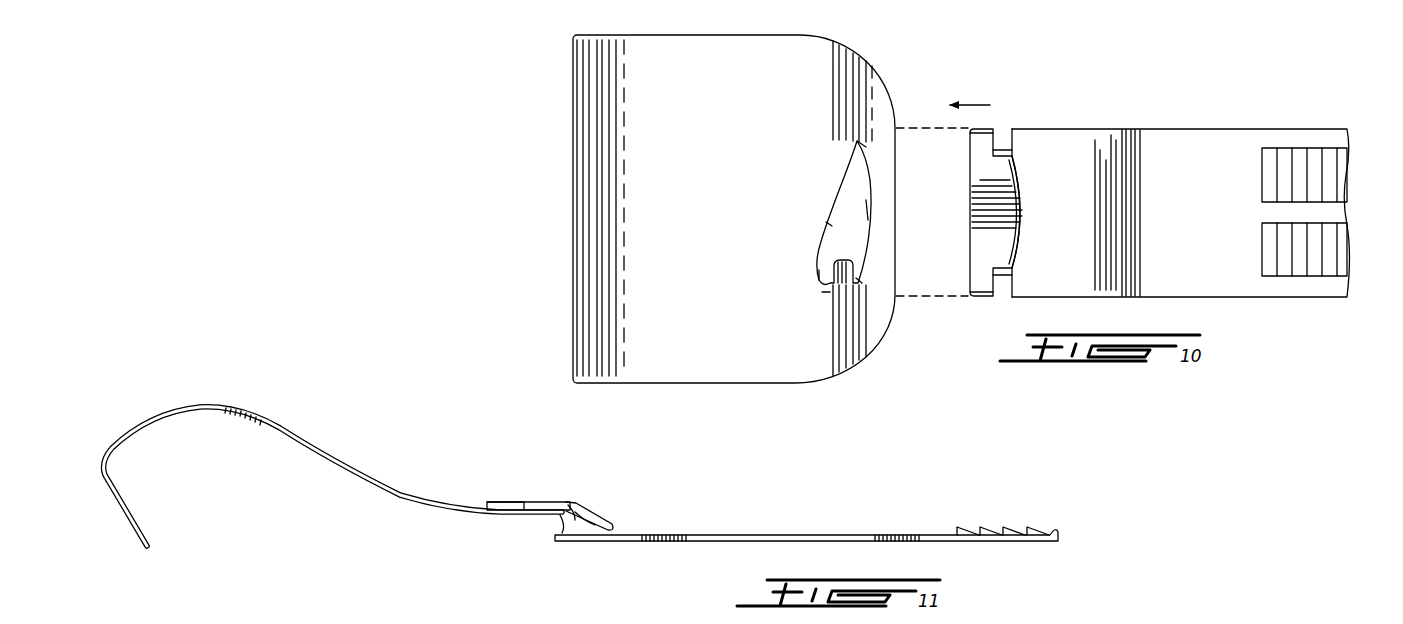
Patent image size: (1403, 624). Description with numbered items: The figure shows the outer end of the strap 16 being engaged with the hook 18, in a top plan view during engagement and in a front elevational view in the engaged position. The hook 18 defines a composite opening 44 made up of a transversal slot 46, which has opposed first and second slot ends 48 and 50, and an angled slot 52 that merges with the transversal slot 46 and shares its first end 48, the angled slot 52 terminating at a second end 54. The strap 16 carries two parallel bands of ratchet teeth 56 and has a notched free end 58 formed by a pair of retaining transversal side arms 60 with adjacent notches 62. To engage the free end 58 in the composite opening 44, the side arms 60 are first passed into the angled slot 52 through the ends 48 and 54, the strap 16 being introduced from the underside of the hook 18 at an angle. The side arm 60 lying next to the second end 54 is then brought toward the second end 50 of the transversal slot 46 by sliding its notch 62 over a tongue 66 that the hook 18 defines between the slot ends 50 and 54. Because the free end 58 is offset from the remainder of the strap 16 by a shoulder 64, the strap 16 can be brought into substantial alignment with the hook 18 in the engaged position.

In FIG. 10, the strap 16 is at (1190, 124).
In FIG. 11, the strap 16 is at (806, 532).
In FIG. 10, the hook 18 is at (569, 125).
In FIG. 11, the hook 18 is at (156, 409).
In FIG. 10, the composite opening 44 is at (835, 212).
In FIG. 10, the transversal slot 46 is at (866, 211).
In FIG. 10, the first slot end 48 is at (860, 140).
In FIG. 10, the second slot end 50 is at (862, 281).
In FIG. 10, the angled slot 52 is at (830, 225).
In FIG. 10, the second end of angled slot 54 is at (822, 275).
In FIG. 10, the ratchet teeth 56 is at (1340, 265).
In FIG. 11, the ratchet teeth 56 is at (1012, 530).
In FIG. 10, the free end 58 is at (993, 248).
In FIG. 11, the free end 58 is at (522, 502).
In FIG. 10, the retaining transversal side arms 60 is at (985, 132).
In FIG. 11, the retaining transversal side arms 60 is at (500, 502).
In FIG. 10, the notches 62 is at (1002, 148).
In FIG. 11, the notches 62 is at (545, 502).
In FIG. 10, the shoulder 64 is at (1027, 212).
In FIG. 11, the shoulder 64 is at (580, 507).
In FIG. 10, the tongue 66 is at (826, 292).